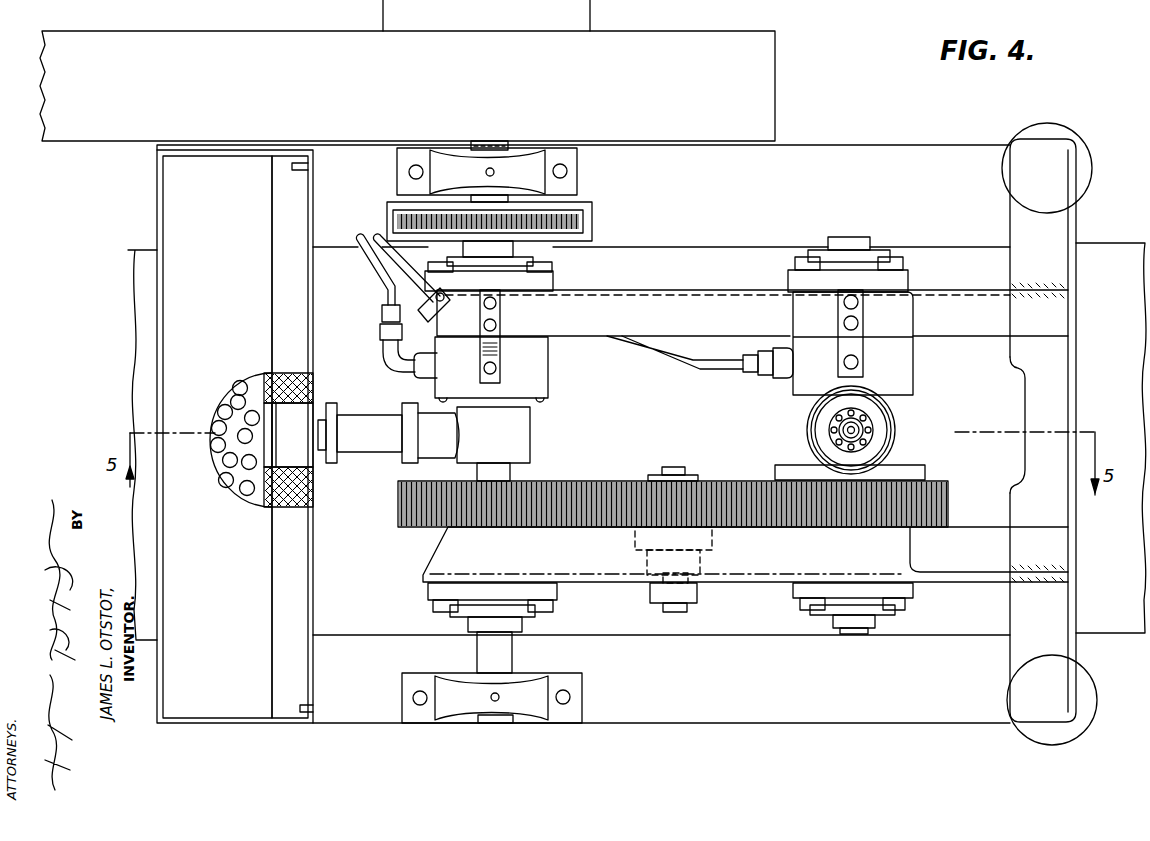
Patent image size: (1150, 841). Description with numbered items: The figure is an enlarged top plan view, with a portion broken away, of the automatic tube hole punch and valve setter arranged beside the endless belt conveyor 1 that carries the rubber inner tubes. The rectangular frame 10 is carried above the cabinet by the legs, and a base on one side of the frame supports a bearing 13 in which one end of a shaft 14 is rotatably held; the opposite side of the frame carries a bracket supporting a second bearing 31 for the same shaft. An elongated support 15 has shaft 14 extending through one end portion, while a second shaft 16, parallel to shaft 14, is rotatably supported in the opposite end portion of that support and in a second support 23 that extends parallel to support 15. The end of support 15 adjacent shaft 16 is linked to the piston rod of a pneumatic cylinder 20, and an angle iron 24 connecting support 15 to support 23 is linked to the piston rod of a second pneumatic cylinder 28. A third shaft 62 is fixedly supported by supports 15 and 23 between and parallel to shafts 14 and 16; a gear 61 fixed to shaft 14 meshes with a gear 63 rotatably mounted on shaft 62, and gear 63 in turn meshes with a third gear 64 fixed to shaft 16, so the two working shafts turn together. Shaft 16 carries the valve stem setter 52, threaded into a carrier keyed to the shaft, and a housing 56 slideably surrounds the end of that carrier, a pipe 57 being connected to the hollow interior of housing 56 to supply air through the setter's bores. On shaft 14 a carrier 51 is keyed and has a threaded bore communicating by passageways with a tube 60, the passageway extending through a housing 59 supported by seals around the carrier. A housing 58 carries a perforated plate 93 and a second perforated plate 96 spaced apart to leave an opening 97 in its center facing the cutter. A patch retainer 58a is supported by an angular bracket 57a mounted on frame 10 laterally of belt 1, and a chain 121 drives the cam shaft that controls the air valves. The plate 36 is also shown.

The endless belt conveyor 1 is at (1123, 622).
The rectangular frame 10 is at (650, 710).
The bearing 13 is at (535, 715).
The shaft 14 is at (495, 723).
The elongated support 15 is at (972, 577).
The second shaft 16 is at (858, 634).
The pneumatic cylinder 20 is at (1088, 707).
The second support 23 is at (968, 286).
The angle iron 24 is at (1057, 232).
The second pneumatic cylinder 28 is at (1083, 165).
The second bearing 31 is at (525, 162).
The top plate 36 is at (775, 68).
The carrier 51 is at (518, 425).
The valve stem setter 52 is at (890, 430).
The housing 56 is at (893, 376).
The pipe 57 is at (735, 362).
The angular bracket 57a is at (240, 727).
The housing 58 is at (363, 440).
The patch retainer 58a is at (257, 697).
The housing 59 is at (532, 365).
The tube 60 is at (393, 352).
The gear 61 is at (425, 530).
The third shaft 62 is at (683, 612).
The gear 63 is at (624, 485).
The third gear 64 is at (796, 480).
The perforated plate 93 is at (312, 505).
The second perforated plate 96 is at (314, 378).
The opening 97 is at (300, 425).
The chain 121 is at (595, 212).